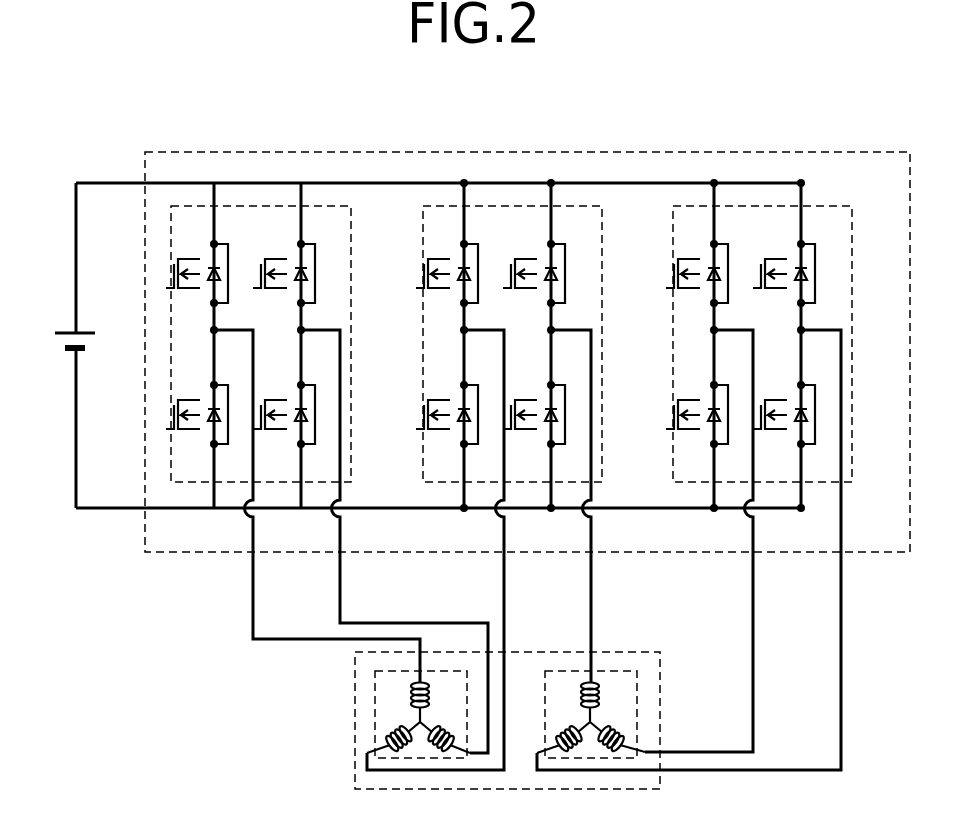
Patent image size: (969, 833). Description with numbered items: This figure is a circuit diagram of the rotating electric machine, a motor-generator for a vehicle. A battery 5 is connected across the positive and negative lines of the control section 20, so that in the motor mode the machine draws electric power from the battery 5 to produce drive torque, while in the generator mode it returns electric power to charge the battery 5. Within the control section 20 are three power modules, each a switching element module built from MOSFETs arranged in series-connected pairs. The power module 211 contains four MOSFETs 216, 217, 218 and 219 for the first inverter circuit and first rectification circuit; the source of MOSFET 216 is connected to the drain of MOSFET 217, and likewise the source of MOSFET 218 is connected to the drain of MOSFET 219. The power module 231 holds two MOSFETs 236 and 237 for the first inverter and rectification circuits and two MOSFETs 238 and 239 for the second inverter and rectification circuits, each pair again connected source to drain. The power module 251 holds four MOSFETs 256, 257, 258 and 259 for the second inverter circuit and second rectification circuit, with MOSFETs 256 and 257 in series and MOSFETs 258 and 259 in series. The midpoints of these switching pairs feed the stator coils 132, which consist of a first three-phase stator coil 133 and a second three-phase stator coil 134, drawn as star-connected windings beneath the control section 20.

The battery 5 is at (65, 332).
The control section 20 is at (635, 152).
The power module 211 is at (171, 313).
The MOSFET 216 is at (188, 268).
The MOSFET 217 is at (188, 420).
The MOSFET 218 is at (267, 288).
The MOSFET 219 is at (275, 428).
The power module 231 is at (423, 333).
The MOSFET 236 is at (438, 267).
The MOSFET 237 is at (438, 420).
The MOSFET 238 is at (517, 288).
The MOSFET 239 is at (525, 428).
The power module 251 is at (673, 333).
The MOSFET 256 is at (688, 267).
The MOSFET 257 is at (688, 420).
The MOSFET 258 is at (767, 288).
The MOSFET 259 is at (775, 428).
The stator coils 132 is at (355, 688).
The first three-phase stator coil 133 is at (375, 723).
The second three-phase stator coil 134 is at (637, 707).